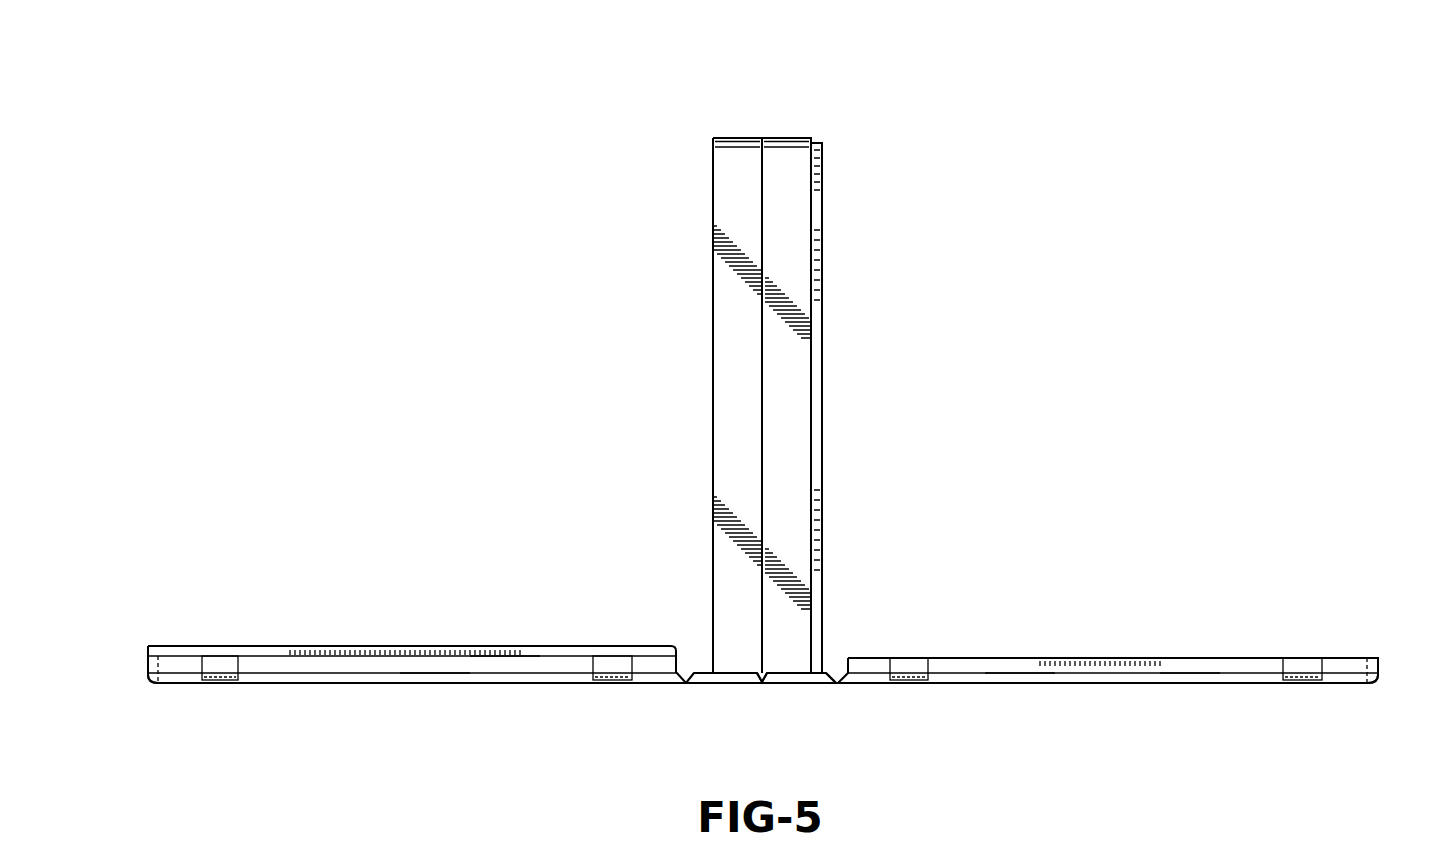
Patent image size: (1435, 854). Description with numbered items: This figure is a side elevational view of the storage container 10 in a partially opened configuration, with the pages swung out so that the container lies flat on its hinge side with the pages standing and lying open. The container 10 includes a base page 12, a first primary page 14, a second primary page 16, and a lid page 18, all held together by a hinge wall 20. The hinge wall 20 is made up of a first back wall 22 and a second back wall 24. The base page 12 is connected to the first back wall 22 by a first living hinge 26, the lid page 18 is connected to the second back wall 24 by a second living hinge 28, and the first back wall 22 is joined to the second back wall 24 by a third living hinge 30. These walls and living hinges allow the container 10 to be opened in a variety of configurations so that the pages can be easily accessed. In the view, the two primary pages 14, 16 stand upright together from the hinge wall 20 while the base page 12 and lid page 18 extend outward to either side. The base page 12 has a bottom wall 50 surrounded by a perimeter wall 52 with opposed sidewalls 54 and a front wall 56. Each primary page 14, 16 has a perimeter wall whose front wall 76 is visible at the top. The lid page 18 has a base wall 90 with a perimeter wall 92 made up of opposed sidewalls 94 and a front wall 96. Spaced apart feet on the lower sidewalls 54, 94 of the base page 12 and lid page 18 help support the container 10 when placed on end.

The storage container 10 is at (762, 436).
The base page 12 is at (1151, 650).
The first primary page 14 is at (814, 368).
The second primary page 16 is at (714, 330).
The lid page 18 is at (352, 636).
The hinge wall 20 is at (732, 692).
The first back wall 22 is at (800, 684).
The second back wall 24 is at (710, 684).
The first living hinge 26 is at (838, 684).
The second living hinge 28 is at (688, 684).
The third living hinge 30 is at (762, 684).
The bottom wall 50 is at (968, 686).
The perimeter wall 52 is at (1190, 679).
The sidewalls 54 is at (1020, 666).
The front wall 56 is at (1380, 663).
The front wall 76 is at (738, 137).
The base wall 90 is at (282, 686).
The perimeter wall 92 is at (498, 675).
The sidewalls 94 is at (433, 666).
The front wall 96 is at (148, 662).